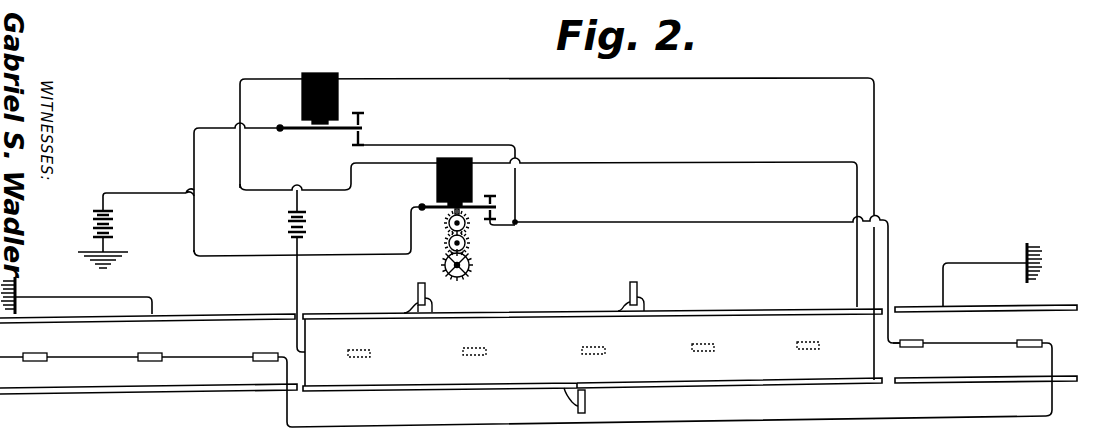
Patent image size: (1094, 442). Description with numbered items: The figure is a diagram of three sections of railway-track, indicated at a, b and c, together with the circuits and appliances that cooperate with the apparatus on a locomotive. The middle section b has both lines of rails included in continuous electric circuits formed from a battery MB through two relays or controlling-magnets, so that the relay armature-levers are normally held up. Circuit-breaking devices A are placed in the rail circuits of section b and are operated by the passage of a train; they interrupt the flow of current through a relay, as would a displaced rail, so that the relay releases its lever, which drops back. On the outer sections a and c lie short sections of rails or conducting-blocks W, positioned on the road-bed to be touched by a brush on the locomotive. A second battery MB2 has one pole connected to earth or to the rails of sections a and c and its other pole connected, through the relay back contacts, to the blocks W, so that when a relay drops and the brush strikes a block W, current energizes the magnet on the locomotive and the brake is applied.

The track section a is at (98, 318).
The track section b is at (532, 312).
The track section c is at (986, 323).
The circuit-breaking devices A is at (425, 292).
The conducting-blocks W is at (526, 375).
The battery MB is at (317, 271).
The battery MB2 is at (136, 228).